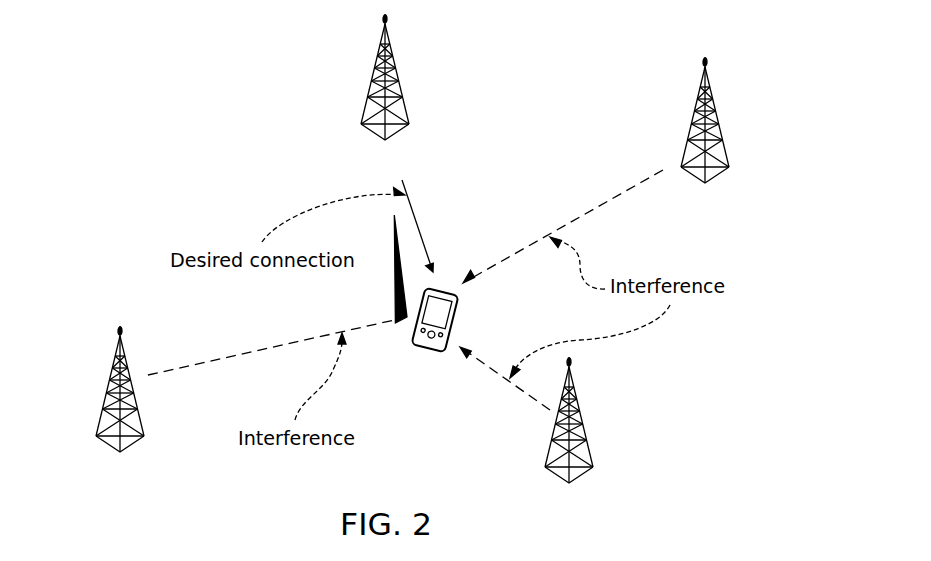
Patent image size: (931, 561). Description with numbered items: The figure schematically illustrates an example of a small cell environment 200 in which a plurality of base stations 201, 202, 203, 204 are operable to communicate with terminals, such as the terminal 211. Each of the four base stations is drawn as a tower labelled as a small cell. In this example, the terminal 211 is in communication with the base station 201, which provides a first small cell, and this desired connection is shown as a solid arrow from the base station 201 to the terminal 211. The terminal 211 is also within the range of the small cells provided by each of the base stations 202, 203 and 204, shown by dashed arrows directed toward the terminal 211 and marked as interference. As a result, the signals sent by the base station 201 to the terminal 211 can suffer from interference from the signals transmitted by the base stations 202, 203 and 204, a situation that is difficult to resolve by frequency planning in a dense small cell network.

The small cell environment 200 is at (166, 154).
The base station 201 is at (400, 78).
The base station 202 is at (718, 118).
The base station 203 is at (583, 424).
The base station 204 is at (107, 380).
The terminal 211 is at (430, 349).